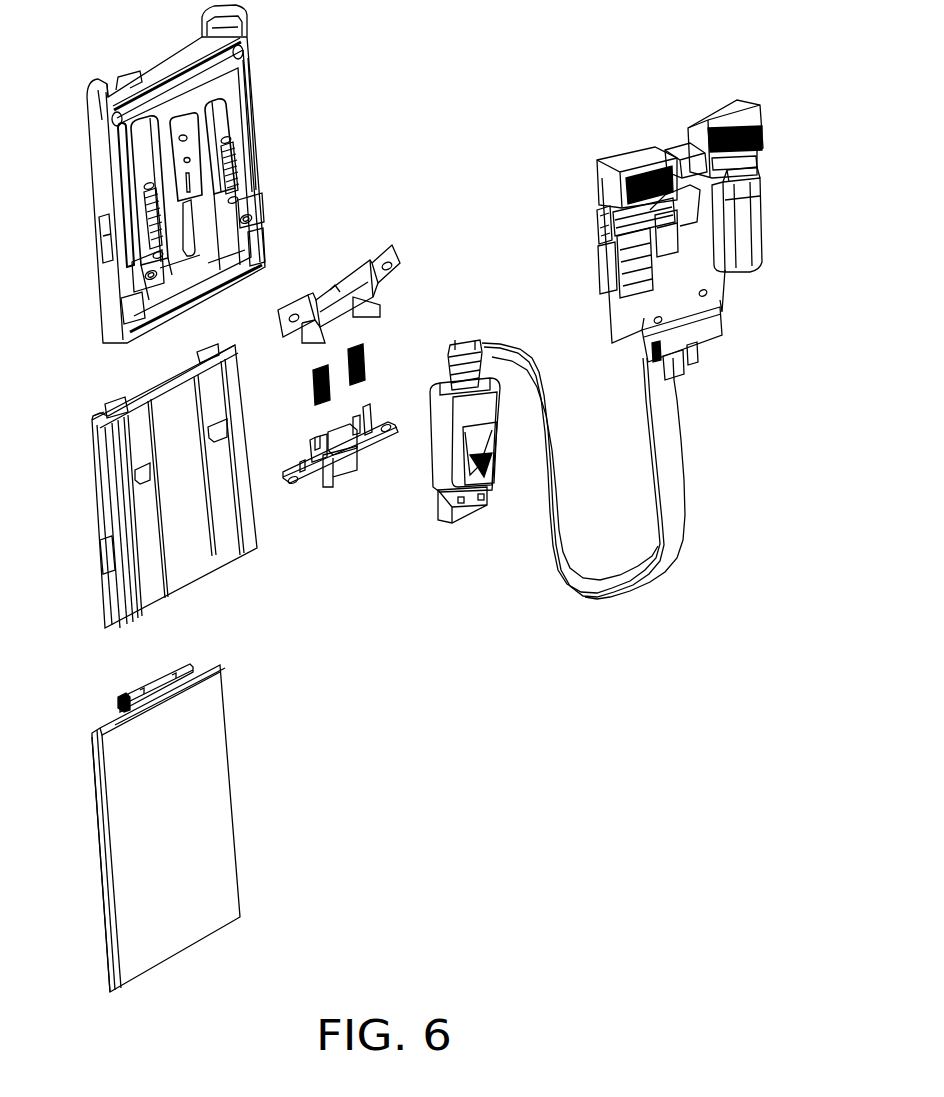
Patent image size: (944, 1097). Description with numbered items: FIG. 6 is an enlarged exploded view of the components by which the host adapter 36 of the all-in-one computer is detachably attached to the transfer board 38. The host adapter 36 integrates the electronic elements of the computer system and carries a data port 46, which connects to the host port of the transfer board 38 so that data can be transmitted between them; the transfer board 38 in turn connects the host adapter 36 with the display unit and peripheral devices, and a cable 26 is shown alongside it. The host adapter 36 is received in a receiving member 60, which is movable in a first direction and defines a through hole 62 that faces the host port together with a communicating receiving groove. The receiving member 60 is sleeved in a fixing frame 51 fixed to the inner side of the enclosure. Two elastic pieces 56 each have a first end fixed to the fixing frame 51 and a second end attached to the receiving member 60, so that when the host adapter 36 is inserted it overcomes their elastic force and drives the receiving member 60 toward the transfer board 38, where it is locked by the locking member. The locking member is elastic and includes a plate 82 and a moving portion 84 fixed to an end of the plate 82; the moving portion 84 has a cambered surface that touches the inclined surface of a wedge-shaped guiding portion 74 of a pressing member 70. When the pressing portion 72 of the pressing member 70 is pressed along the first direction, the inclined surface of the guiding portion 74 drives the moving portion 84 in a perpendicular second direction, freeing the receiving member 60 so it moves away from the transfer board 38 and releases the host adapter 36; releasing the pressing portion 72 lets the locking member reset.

The cable 26 is at (677, 517).
The host adapter 36 is at (200, 797).
The transfer board 38 is at (693, 267).
The data port 46 is at (167, 687).
The fixing frame 51 is at (104, 190).
The elastic piece 56 is at (233, 170).
The receiving member 60 is at (187, 562).
The through hole 62 is at (152, 390).
The pressing member 70 is at (400, 320).
The pressing portion 72 is at (343, 483).
The guiding portion 74 is at (357, 453).
The plate 82 is at (193, 167).
The moving portion 84 is at (217, 283).